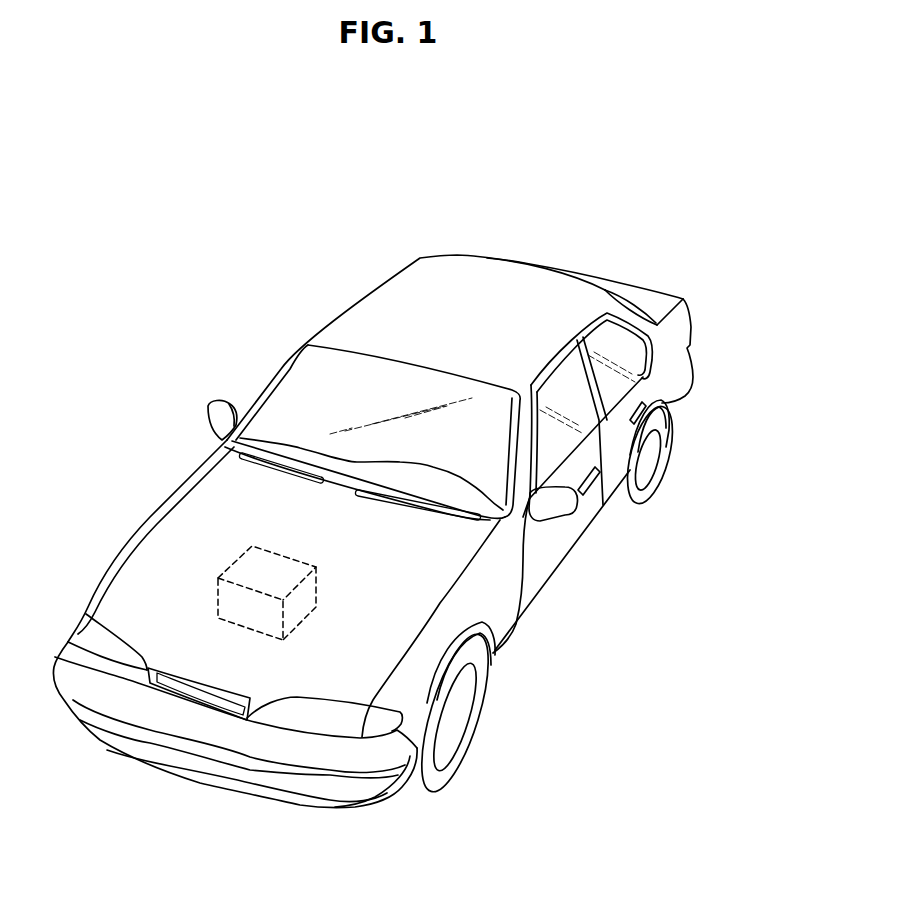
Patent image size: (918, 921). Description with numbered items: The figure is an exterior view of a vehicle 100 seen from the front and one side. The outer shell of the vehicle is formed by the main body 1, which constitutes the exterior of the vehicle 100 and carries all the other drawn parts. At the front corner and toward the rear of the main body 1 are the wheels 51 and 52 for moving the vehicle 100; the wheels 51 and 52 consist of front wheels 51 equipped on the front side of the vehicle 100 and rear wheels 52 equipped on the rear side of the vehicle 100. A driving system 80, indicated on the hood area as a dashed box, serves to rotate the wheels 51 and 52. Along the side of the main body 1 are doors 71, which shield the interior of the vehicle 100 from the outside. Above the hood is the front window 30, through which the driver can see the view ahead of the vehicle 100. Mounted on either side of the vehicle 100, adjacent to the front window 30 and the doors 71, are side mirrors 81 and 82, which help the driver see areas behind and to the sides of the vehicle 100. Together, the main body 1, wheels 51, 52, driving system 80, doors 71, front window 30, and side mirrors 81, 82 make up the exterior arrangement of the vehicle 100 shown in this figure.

The main body 1 is at (459, 233).
The vehicle 100 is at (218, 193).
The front window 30 is at (328, 381).
The front wheels 51 is at (459, 719).
The rear wheels 52 is at (643, 449).
The doors 71 is at (587, 503).
The driving system 80 is at (232, 568).
The side mirror 81 is at (562, 505).
The side mirror 82 is at (213, 421).